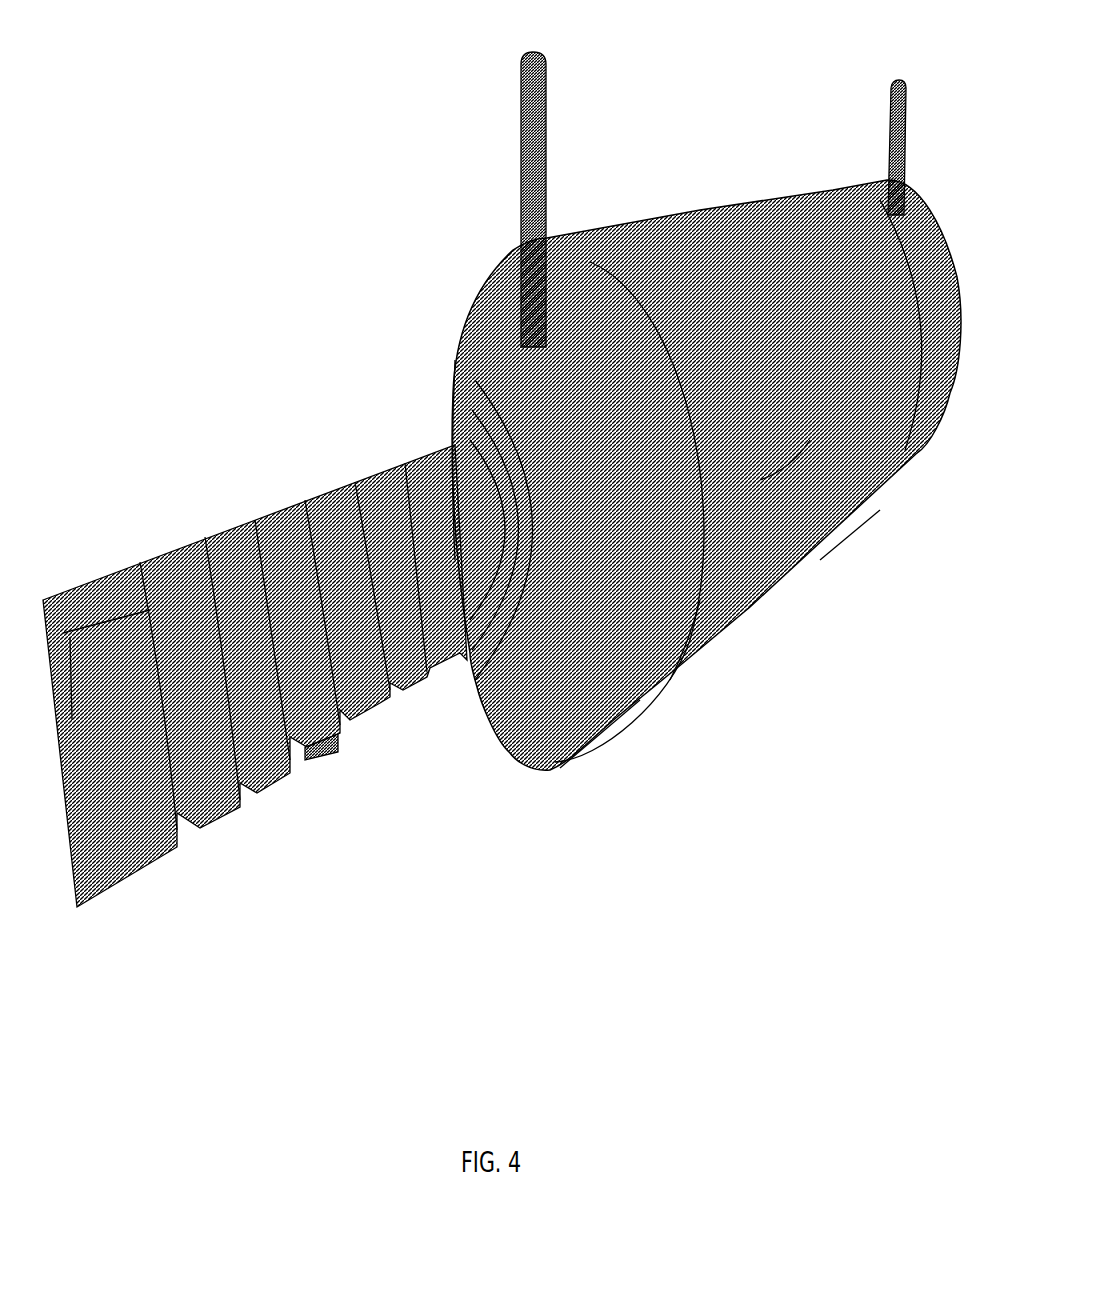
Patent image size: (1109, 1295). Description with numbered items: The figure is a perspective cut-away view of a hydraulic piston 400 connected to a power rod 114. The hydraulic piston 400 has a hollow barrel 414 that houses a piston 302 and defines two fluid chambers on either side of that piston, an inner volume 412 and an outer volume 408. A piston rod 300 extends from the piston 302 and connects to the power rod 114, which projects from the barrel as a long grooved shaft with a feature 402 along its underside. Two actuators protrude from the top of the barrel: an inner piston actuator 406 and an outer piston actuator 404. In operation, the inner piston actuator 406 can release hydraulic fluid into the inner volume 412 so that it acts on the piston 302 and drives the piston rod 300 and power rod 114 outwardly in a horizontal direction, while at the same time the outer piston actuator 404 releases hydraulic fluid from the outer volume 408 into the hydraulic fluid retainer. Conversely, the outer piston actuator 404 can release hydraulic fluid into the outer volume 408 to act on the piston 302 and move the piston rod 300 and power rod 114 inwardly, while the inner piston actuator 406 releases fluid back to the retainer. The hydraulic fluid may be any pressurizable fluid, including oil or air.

The power rod 114 is at (105, 565).
The piston rod 300 is at (780, 470).
The piston 302 is at (683, 640).
The hydraulic piston 400 is at (657, 210).
The key groove 402 is at (352, 740).
The outer piston actuator 404 is at (520, 146).
The inner piston actuator 406 is at (885, 130).
The outer volume 408 is at (597, 753).
The inner volume 412 is at (848, 540).
The hollow barrel 414 is at (455, 355).